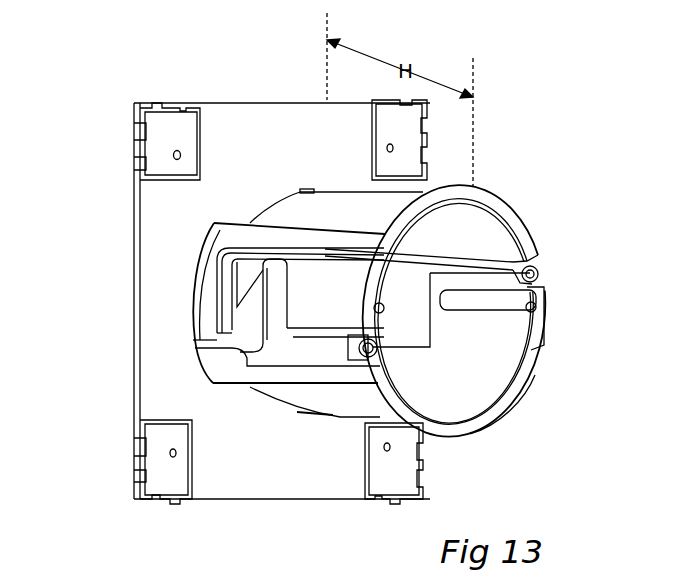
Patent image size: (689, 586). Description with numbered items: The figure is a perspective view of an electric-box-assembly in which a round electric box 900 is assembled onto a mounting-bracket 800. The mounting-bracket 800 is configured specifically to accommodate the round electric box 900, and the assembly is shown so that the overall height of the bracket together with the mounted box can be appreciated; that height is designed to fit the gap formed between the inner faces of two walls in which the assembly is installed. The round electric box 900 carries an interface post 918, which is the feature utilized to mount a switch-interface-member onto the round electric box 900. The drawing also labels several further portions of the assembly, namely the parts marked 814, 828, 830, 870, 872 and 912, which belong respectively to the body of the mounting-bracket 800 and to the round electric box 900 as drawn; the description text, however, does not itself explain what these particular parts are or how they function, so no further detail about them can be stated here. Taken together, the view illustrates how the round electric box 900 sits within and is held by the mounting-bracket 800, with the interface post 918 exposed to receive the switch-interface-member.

The mounting-bracket 800 is at (126, 317).
The housing body 814 is at (276, 237).
The mounting bracket 828 is at (135, 162).
The mounting hole 830 is at (175, 158).
The hinge rod 870 is at (292, 345).
The hinge pin 872 is at (537, 268).
The round electric box 900 is at (505, 420).
The ring flange 912 is at (518, 392).
The interface post 918 is at (515, 313).